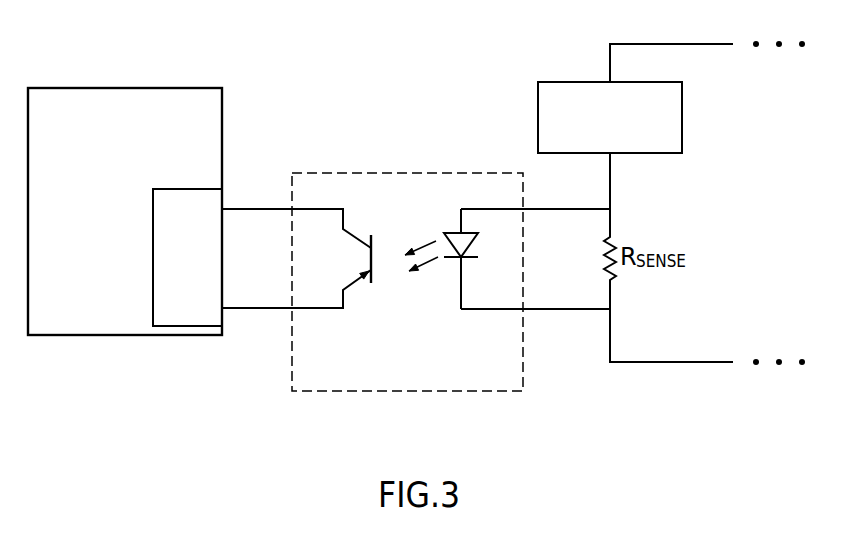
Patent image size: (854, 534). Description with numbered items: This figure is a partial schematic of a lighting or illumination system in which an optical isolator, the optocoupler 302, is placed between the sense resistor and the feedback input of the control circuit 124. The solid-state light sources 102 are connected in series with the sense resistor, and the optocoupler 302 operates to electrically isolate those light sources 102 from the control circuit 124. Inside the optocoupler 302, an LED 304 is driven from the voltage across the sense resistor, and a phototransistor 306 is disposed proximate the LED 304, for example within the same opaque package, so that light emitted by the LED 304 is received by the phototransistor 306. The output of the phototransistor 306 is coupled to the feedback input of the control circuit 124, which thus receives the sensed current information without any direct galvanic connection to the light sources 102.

The control circuit 124 is at (120, 87).
The optocoupler 302 is at (372, 172).
The LED 304 is at (453, 232).
The phototransistor 306 is at (360, 285).
The solid-state light sources 102 is at (583, 81).